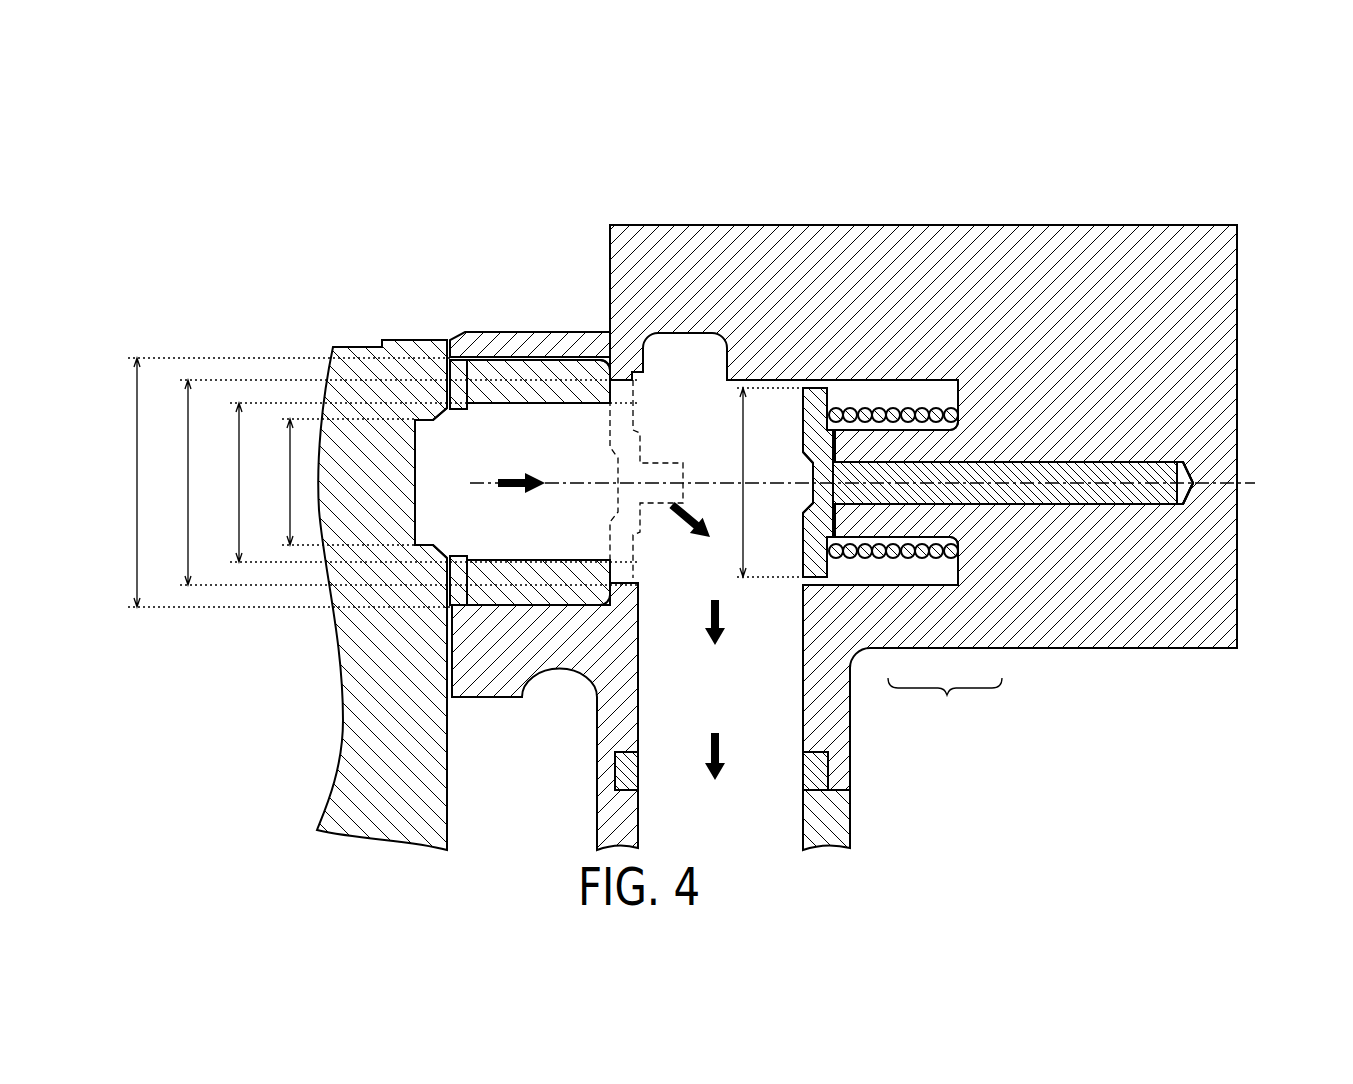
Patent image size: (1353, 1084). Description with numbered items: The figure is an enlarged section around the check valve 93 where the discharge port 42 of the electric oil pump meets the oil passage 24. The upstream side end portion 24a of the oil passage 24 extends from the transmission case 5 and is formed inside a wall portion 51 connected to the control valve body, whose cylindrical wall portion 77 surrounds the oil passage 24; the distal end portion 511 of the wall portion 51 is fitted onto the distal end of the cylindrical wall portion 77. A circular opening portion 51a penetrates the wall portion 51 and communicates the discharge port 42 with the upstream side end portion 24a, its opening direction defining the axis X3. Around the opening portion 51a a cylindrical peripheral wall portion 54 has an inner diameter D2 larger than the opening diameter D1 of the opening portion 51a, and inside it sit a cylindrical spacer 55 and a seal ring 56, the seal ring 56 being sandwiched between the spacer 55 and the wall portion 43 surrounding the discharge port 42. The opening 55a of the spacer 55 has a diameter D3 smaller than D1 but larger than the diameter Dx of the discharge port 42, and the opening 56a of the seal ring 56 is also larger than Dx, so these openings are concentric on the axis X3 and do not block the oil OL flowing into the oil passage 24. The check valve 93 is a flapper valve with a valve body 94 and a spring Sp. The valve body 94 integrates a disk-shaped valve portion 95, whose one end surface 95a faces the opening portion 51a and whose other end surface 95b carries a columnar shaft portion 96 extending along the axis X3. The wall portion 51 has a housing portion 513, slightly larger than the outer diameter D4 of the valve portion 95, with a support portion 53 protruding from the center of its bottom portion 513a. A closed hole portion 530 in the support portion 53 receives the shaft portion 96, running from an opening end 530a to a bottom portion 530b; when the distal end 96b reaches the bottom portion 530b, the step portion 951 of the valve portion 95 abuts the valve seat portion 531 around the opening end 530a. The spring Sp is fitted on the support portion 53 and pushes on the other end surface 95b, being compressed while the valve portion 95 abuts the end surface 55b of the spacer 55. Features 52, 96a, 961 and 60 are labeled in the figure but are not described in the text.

The transmission case 5 is at (1149, 188).
The discharge port 42 is at (420, 520).
The wall portion 43 is at (447, 408).
The cylindrical peripheral wall portion 54 is at (478, 348).
The cylindrical spacer 55 is at (510, 577).
The opening of the spacer 55a is at (567, 562).
The end surface of the spacer 55b is at (628, 356).
The seal ring 56 is at (483, 607).
The opening of the seal ring 56a is at (460, 410).
The wall portion 51 is at (850, 706).
The opening portion 51a is at (640, 570).
The housing outer wall 52 is at (803, 727).
The distal end portion 511 is at (845, 768).
The cylindrical wall portion 77 is at (828, 818).
The oil passage 24 is at (729, 846).
The upstream side end portion 24a is at (731, 716).
The oil OL is at (688, 754).
The valve portion 95 is at (815, 400).
The step portion 951 is at (836, 448).
The support portion 53 is at (900, 443).
The housing portion 513 is at (956, 398).
The bottom portion 513a is at (952, 575).
The shaft portion 96 is at (1017, 461).
The shaft shoulder 96a is at (833, 462).
The distal end 96b is at (1178, 462).
The shaft outer surface 961 is at (1086, 504).
The hole portion 530 is at (1078, 462).
The opening end 530a is at (845, 510).
The bottom portion 530b is at (1195, 483).
The valve seat portion 531 is at (827, 517).
The one end surface 95a is at (812, 588).
The other end surface 95b is at (828, 568).
The valve body 94 is at (820, 582).
The spring Sp is at (950, 555).
The check valve 93 is at (945, 704).
The shaft end region 60 is at (1188, 517).
The axis X3 is at (879, 484).
The opening diameter of the opening portion D1 is at (395, 482).
The inner diameter of the peripheral wall portion D2 is at (277, 482).
The opening diameter of the spacer opening D3 is at (421, 482).
The opening diameter of the discharge port Dx is at (334, 482).
The outer diameter of the valve portion D4 is at (756, 482).